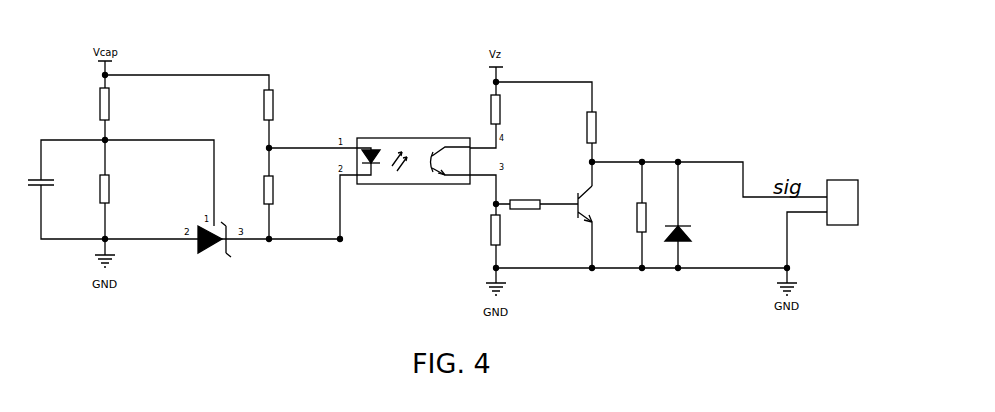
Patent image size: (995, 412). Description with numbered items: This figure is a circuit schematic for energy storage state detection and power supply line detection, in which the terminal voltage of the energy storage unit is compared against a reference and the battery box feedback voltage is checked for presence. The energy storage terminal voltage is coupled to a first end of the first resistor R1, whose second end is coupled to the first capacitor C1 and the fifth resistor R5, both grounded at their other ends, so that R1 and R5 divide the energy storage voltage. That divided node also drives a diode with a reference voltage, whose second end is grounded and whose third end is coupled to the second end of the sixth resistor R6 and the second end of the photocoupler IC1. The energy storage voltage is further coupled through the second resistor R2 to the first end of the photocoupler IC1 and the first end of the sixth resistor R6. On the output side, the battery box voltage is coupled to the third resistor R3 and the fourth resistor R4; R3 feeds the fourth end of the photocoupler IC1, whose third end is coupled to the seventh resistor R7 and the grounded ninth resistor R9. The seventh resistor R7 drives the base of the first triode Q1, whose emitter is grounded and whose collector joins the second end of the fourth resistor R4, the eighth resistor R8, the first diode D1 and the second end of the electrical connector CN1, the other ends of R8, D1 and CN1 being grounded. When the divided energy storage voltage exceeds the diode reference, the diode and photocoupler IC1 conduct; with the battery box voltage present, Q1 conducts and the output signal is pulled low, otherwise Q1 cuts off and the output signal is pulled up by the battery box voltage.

The first resistor R1 is at (113, 104).
The second resistor R2 is at (277, 105).
The third resistor R3 is at (504, 109).
The fourth resistor R4 is at (601, 127).
The fifth resistor R5 is at (113, 189).
The sixth resistor R6 is at (277, 190).
The seventh resistor R7 is at (537, 198).
The eighth resistor R8 is at (650, 215).
The ninth resistor R9 is at (504, 230).
The first capacitor C1 is at (50, 181).
The photocoupler IC1 is at (412, 153).
The first triode Q1 is at (595, 227).
The first diode D1 is at (684, 215).
The electrical connector CN1 is at (842, 195).